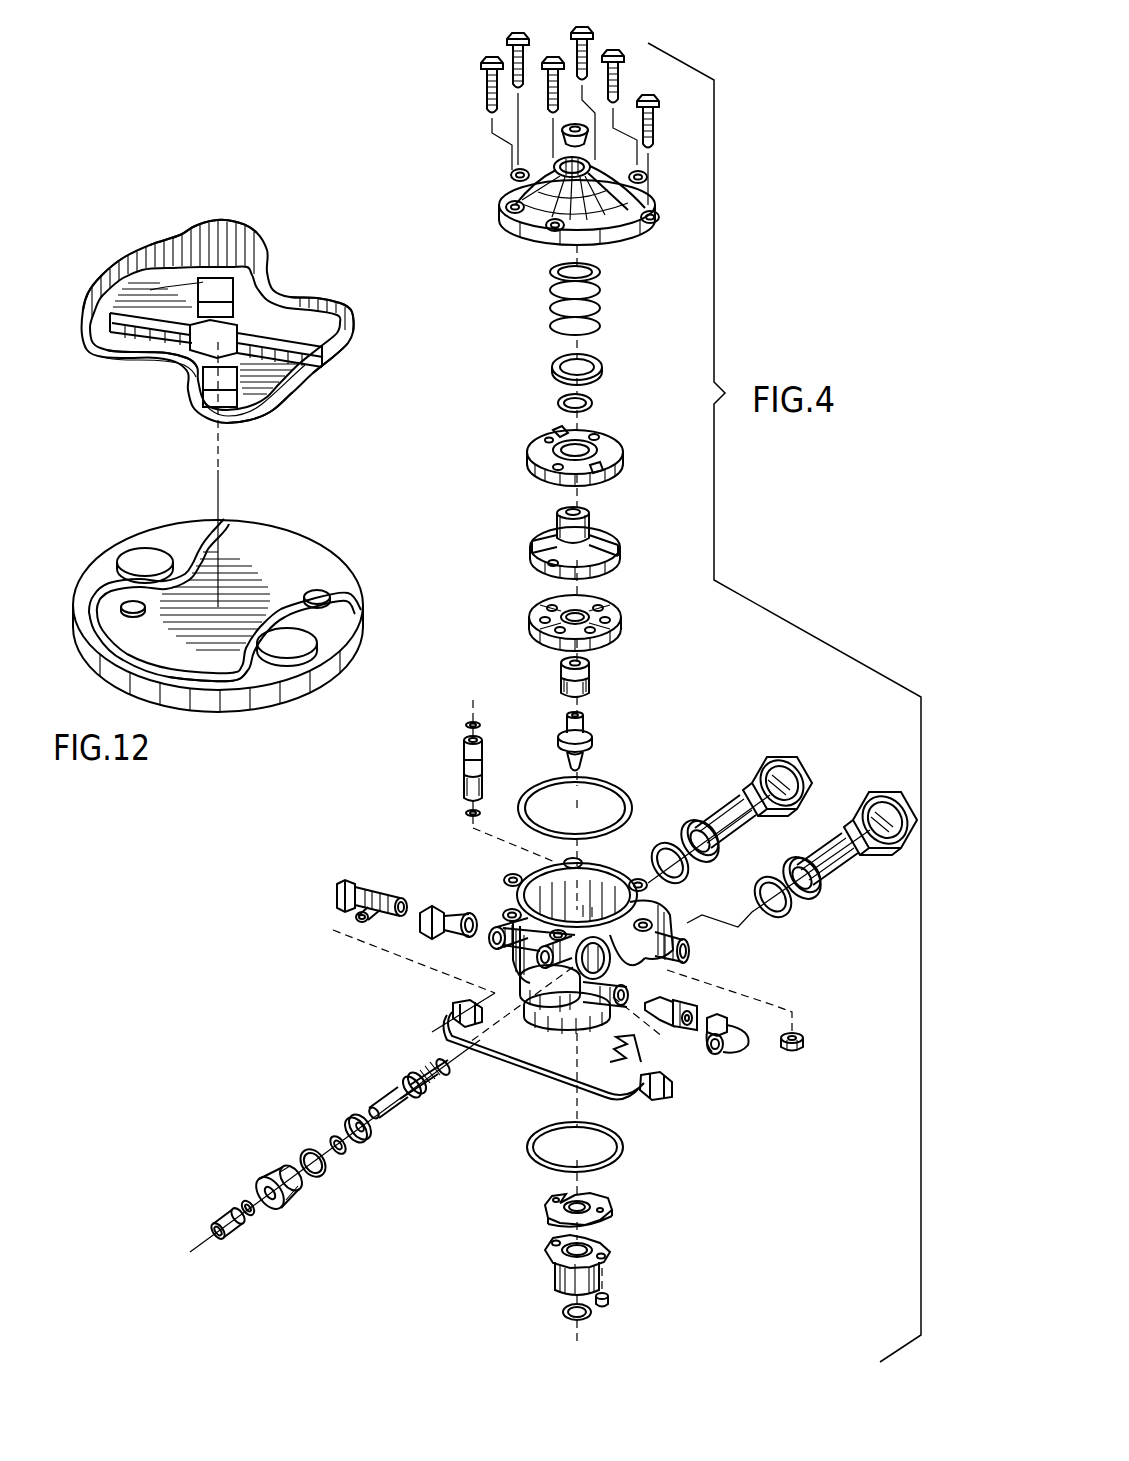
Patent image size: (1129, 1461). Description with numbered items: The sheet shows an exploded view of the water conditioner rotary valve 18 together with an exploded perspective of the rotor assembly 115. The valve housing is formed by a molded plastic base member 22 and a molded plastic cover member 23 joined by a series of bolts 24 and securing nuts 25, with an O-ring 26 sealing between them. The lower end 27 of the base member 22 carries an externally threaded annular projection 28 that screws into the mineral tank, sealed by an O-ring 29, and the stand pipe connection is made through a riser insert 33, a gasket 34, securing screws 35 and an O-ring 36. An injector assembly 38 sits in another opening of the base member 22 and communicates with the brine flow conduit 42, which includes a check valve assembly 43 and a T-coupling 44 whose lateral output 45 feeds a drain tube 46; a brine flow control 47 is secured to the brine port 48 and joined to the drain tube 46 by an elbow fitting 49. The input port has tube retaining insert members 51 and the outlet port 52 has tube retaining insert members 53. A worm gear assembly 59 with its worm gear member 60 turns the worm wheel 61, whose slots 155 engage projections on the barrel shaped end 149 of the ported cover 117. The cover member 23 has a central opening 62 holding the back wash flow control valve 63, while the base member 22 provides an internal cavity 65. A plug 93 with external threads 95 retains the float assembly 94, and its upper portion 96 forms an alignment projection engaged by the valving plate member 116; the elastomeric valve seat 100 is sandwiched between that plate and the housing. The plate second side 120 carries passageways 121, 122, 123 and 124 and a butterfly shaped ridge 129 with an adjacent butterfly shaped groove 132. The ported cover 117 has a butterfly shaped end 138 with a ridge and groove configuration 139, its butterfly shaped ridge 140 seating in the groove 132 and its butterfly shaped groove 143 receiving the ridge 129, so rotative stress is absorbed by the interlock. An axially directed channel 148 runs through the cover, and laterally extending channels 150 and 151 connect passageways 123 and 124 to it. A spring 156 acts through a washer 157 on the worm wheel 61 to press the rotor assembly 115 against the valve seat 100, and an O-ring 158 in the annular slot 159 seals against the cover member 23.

In FIG. 4, the water conditioner rotary valve 18 is at (600, 1000).
In FIG. 4, the base member 22 is at (600, 953).
In FIG. 4, the cover member 23 is at (559, 192).
In FIG. 4, the bolts 24 is at (516, 34).
In FIG. 4, the securing nuts 25 is at (805, 1040).
In FIG. 4, the O-ring 26 is at (621, 801).
In FIG. 4, the lower end 27 is at (542, 1010).
In FIG. 4, the externally threaded annular projection 28 is at (587, 1023).
In FIG. 4, the O-ring 29 is at (618, 1158).
In FIG. 4, the riser insert 33 is at (556, 1283).
In FIG. 4, the gasket 34 is at (545, 1212).
In FIG. 4, the securing screws 35 is at (610, 1300).
In FIG. 4, the O-ring 36 is at (565, 1322).
In FIG. 4, the injector assembly 38 is at (460, 777).
In FIG. 4, the brine flow conduit 42 is at (379, 895).
In FIG. 4, the check valve assembly 43 is at (428, 940).
In FIG. 4, the T-coupling 44 is at (380, 896).
In FIG. 4, the lateral output 45 is at (360, 922).
In FIG. 4, the drain tube 46 is at (528, 1073).
In FIG. 4, the brine flow control 47 is at (683, 1004).
In FIG. 4, the brine port 48 is at (630, 994).
In FIG. 4, the elbow fitting 49 is at (740, 1028).
In FIG. 4, the tube retaining insert members 51 is at (743, 763).
In FIG. 4, the outlet port 52 is at (676, 947).
In FIG. 4, the tube retaining insert members 53 is at (893, 781).
In FIG. 4, the worm gear assembly 59 is at (335, 1161).
In FIG. 4, the worm gear member 60 is at (398, 1115).
In FIG. 4, the worm wheel 61 is at (591, 452).
In FIG. 4, the central opening 62 is at (583, 160).
In FIG. 4, the back wash flow control valve 63 is at (562, 128).
In FIG. 4, the internal cavity 65 is at (600, 880).
In FIG. 4, the plug 93 is at (583, 680).
In FIG. 4, the float assembly 94 is at (594, 729).
In FIG. 4, the external threads 95 is at (562, 691).
In FIG. 4, the upper portion 96 is at (590, 665).
In FIG. 4, the valve seat 100 is at (627, 615).
In FIG. 12, the rotor assembly 115 is at (208, 319).
In FIG. 4, the rotor assembly 115 is at (596, 543).
In FIG. 12, the valving plate member 116 is at (337, 638).
In FIG. 4, the valving plate member 116 is at (548, 573).
In FIG. 12, the ported cover 117 is at (293, 308).
In FIG. 4, the ported cover 117 is at (596, 524).
In FIG. 12, the plate second side 120 is at (234, 616).
In FIG. 12, the passageway 121 is at (303, 657).
In FIG. 12, the passageway 122 is at (137, 548).
In FIG. 12, the passageway 123 is at (317, 590).
In FIG. 12, the passageway 124 is at (138, 612).
In FIG. 12, the butterfly shaped ridge 129 is at (227, 523).
In FIG. 12, the butterfly shaped groove 132 is at (265, 680).
In FIG. 12, the butterfly shaped end 138 is at (102, 276).
In FIG. 12, the butterfly shaped ridge and groove configuration 139 is at (120, 355).
In FIG. 12, the butterfly shaped ridge 140 is at (303, 407).
In FIG. 12, the butterfly shaped groove 143 is at (323, 378).
In FIG. 12, the axially directed channel 148 is at (203, 350).
In FIG. 12, the barrel shaped end 149 is at (222, 227).
In FIG. 12, the laterally extending channel 150 is at (112, 333).
In FIG. 12, the laterally extending channel 151 is at (287, 358).
In FIG. 4, the slots 155 is at (555, 432).
In FIG. 4, the spring 156 is at (600, 297).
In FIG. 4, the washer 157 is at (603, 366).
In FIG. 4, the O-ring 158 is at (594, 403).
In FIG. 4, the annular slot 159 is at (560, 511).